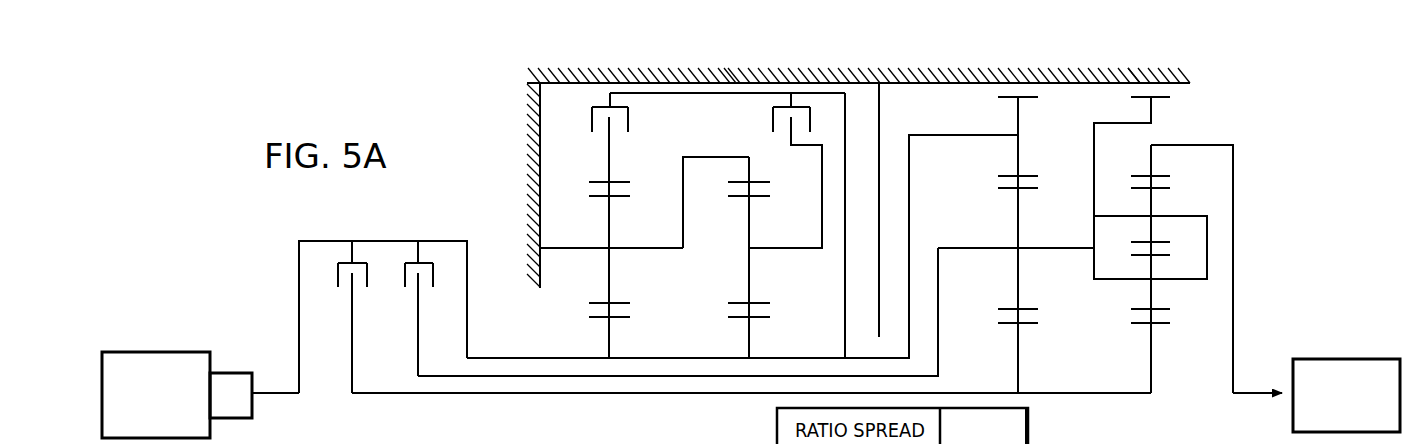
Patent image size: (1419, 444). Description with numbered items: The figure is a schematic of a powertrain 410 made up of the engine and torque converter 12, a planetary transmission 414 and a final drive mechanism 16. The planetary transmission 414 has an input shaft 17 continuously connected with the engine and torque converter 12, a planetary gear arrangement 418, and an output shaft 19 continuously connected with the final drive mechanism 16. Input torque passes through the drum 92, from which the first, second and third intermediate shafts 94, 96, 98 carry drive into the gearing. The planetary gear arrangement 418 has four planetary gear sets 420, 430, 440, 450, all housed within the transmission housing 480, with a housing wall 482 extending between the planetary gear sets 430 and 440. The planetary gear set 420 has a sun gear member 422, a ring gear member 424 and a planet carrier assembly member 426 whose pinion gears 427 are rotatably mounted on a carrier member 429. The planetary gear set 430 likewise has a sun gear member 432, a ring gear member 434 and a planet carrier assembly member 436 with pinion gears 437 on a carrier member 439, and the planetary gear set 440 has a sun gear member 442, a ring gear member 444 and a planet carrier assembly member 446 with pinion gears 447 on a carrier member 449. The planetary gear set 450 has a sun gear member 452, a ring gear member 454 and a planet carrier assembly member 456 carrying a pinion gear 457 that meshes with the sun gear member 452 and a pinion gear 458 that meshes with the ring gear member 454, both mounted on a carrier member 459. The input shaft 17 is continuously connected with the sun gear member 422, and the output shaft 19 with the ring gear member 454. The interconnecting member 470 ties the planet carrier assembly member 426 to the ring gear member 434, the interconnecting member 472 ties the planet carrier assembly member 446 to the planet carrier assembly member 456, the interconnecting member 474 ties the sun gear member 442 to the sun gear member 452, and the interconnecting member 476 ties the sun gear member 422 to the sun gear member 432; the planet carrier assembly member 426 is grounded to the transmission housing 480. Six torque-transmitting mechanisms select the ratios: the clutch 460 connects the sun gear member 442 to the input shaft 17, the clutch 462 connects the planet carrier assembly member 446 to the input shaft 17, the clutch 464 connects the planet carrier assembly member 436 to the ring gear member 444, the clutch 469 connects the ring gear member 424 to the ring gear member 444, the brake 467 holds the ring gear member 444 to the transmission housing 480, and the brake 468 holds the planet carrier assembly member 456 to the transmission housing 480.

The engine and torque converter 12 is at (175, 334).
The final drive mechanism 16 is at (1330, 342).
The input shaft 17 is at (280, 397).
The output shaft 19 is at (1262, 397).
The drum 92 is at (315, 240).
The first intermediate shaft 94 is at (490, 359).
The second intermediate shaft 96 is at (538, 376).
The third intermediate shaft 98 is at (585, 393).
The powertrain 410 is at (497, 99).
The planetary transmission 414 is at (685, 62).
The planetary gear arrangement 418 is at (1063, 62).
The planetary gear set 420 is at (623, 326).
The sun gear member 422 is at (598, 323).
The ring gear member 424 is at (622, 178).
The planet carrier assembly member 426 is at (582, 262).
The pinion gears 427 is at (613, 282).
The carrier member 429 is at (640, 246).
The planetary gear set 430 is at (762, 326).
The sun gear member 432 is at (738, 323).
The ring gear member 434 is at (760, 178).
The planet carrier assembly member 436 is at (772, 262).
The pinion gears 437 is at (747, 233).
The carrier member 439 is at (785, 246).
The planetary gear set 440 is at (1031, 333).
The sun gear member 442 is at (1008, 325).
The ring gear member 444 is at (1008, 175).
The planet carrier assembly member 446 is at (975, 267).
The pinion gears 447 is at (1016, 214).
The carrier member 449 is at (978, 247).
The planetary gear set 450 is at (1161, 329).
The sun gear member 452 is at (1139, 325).
The ring gear member 454 is at (1141, 175).
The planet carrier assembly member 456 is at (1192, 291).
The pinion gear 457 is at (1148, 294).
The pinion gear 458 is at (1153, 205).
The carrier member 459 is at (1068, 250).
The clutch 460 is at (343, 292).
The clutch 462 is at (408, 292).
The clutch 464 is at (821, 112).
The brake 467 is at (992, 90).
The brake 468 is at (1187, 90).
The clutch 469 is at (581, 114).
The interconnecting member 470 is at (713, 155).
The interconnecting member 472 is at (1061, 247).
The interconnecting member 474 is at (1083, 395).
The interconnecting member 476 is at (735, 358).
The transmission housing 480 is at (734, 66).
The housing wall 482 is at (882, 128).